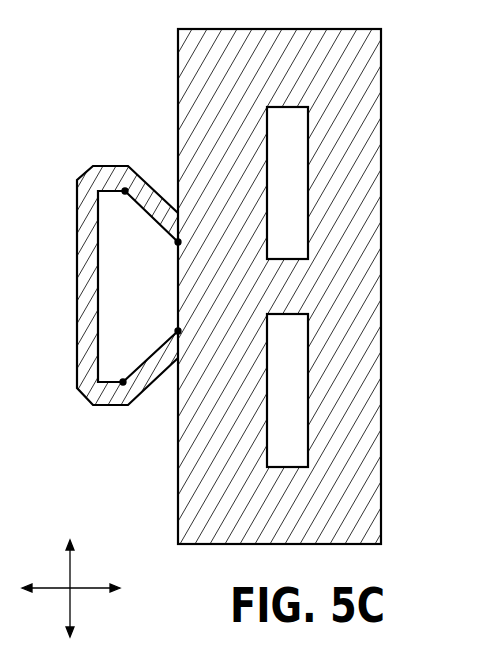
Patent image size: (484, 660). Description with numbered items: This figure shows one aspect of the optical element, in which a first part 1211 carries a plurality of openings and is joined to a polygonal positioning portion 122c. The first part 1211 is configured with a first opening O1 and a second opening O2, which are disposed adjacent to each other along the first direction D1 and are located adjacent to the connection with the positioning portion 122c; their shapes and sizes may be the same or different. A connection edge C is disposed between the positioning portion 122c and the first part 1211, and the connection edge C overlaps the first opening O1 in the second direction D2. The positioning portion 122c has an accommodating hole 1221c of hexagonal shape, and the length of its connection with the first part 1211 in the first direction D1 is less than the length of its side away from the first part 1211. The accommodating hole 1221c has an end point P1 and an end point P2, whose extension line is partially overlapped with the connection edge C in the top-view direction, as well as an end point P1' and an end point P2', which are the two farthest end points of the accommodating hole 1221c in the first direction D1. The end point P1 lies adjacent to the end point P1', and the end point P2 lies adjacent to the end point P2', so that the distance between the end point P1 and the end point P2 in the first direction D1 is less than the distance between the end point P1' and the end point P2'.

The first part 1211 is at (218, 53).
The positioning portion 122c is at (83, 222).
The accommodating hole 1221c is at (110, 352).
The end point P1' is at (98, 157).
The end point P1 is at (164, 195).
The connection edge C is at (178, 265).
The end point P2 is at (146, 318).
The end point P2' is at (112, 414).
The first opening O1 is at (288, 192).
The second opening O2 is at (288, 372).
The first direction D1 is at (75, 575).
The second direction D2 is at (87, 590).